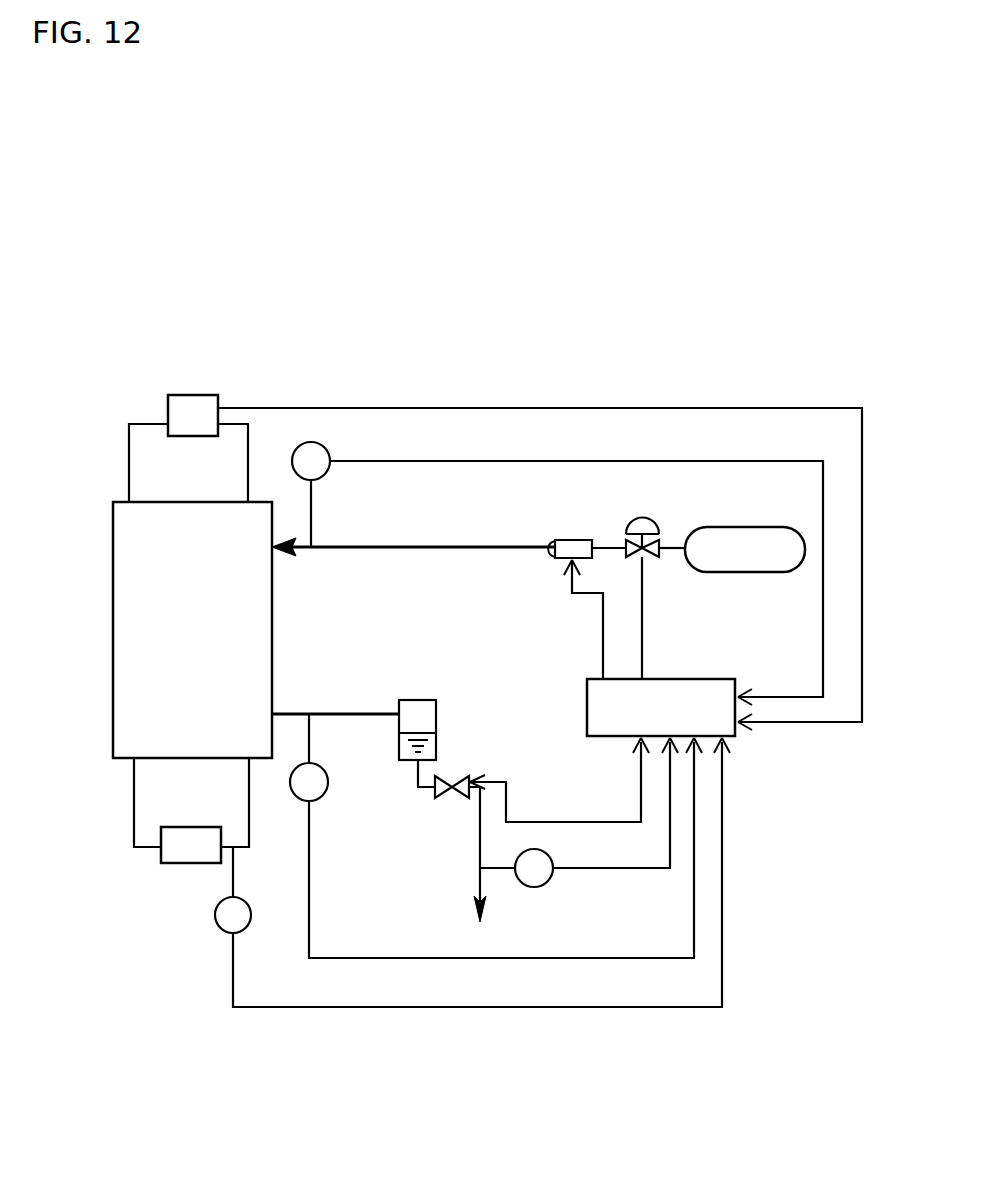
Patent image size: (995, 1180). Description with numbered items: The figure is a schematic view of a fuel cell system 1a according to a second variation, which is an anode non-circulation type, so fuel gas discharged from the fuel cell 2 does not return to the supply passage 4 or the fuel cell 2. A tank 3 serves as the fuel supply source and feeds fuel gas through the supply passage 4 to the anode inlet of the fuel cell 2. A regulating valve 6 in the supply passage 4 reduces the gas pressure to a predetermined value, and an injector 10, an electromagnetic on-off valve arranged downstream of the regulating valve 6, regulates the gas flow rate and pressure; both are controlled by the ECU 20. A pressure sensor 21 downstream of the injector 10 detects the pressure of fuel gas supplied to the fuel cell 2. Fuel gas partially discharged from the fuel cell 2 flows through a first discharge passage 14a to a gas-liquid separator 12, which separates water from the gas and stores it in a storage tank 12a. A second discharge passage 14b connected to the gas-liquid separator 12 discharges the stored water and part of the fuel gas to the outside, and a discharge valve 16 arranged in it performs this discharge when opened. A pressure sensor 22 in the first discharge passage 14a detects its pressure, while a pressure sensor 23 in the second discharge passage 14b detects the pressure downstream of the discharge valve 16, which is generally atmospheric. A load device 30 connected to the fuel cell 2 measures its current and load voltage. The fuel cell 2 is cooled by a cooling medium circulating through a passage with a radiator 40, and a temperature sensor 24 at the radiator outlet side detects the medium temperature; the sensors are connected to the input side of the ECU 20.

The system 1a is at (618, 372).
The fuel cell 2 is at (272, 598).
The tank 3 is at (734, 527).
The supply passage 4 is at (385, 547).
The regulating valve 6 is at (655, 519).
The injector 10 is at (570, 540).
The gas-liquid separator 12 is at (425, 700).
The storage tank 12a is at (399, 748).
The first discharge passage 14a is at (346, 714).
The second discharge passage 14b is at (418, 787).
The discharge valve 16 is at (471, 782).
The ECU 20 is at (707, 679).
The pressure sensor 21 is at (329, 449).
The pressure sensor 22 is at (322, 796).
The pressure sensor 23 is at (548, 882).
The temperature sensor 24 is at (251, 905).
The load device 30 is at (205, 395).
The radiator 40 is at (200, 828).